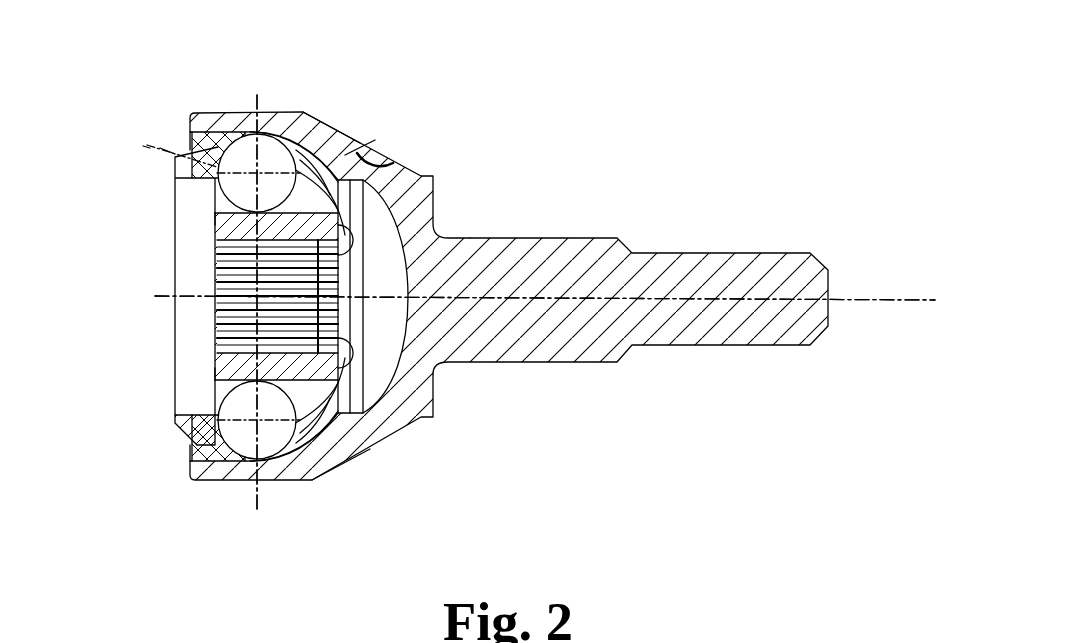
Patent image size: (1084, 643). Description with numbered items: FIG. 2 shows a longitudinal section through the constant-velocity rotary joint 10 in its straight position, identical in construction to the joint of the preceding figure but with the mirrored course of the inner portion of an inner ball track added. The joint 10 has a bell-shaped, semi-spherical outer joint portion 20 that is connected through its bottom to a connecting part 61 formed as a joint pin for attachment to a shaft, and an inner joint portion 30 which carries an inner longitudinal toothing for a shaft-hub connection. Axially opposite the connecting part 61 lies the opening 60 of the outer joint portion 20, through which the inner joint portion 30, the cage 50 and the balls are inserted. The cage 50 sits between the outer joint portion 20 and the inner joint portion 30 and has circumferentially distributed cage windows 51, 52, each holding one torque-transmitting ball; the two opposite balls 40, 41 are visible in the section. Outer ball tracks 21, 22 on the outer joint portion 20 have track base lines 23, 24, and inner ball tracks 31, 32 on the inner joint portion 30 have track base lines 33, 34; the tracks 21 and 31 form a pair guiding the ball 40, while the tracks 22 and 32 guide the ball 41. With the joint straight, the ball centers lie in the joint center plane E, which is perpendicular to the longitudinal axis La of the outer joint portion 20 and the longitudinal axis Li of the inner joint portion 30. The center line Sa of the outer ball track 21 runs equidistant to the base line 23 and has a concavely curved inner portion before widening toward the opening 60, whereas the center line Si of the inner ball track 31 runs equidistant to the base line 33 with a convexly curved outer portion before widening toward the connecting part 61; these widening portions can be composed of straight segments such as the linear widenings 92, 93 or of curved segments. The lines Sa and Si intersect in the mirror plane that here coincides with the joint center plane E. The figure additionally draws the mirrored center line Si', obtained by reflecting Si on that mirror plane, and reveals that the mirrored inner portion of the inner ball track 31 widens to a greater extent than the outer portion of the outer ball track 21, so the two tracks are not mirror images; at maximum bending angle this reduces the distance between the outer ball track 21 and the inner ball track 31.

The constant-velocity rotary joint 10 is at (550, 178).
The outer joint portion 20 is at (427, 173).
The outer ball track 21 is at (363, 147).
The outer ball track 22 is at (317, 440).
The track base line of an outer ball track 23 is at (312, 160).
The track base line of an outer ball track 24 is at (345, 457).
The inner joint portion 30 is at (238, 306).
The inner ball track 31 is at (277, 234).
The inner ball track 32 is at (277, 362).
The track base line of an inner ball track 33 is at (217, 215).
The track base line of an inner ball track 34 is at (213, 375).
The ball 40 is at (247, 147).
The ball 41 is at (238, 445).
The cage 50 is at (220, 299).
The cage window 51 is at (298, 137).
The cage window 52 is at (298, 480).
The opening 60 is at (138, 323).
The connecting part 61 is at (680, 255).
The linear widening 92 is at (393, 163).
The linear widening 93 is at (147, 141).
The center line of outer ball track Sa is at (143, 146).
The center line of inner ball track Si is at (385, 116).
The mirrored center line of inner ball track Si' is at (152, 109).
The longitudinal axis of outer joint portion La is at (870, 300).
The longitudinal axis of inner joint portion Li is at (545, 298).
The joint center plane E is at (253, 498).